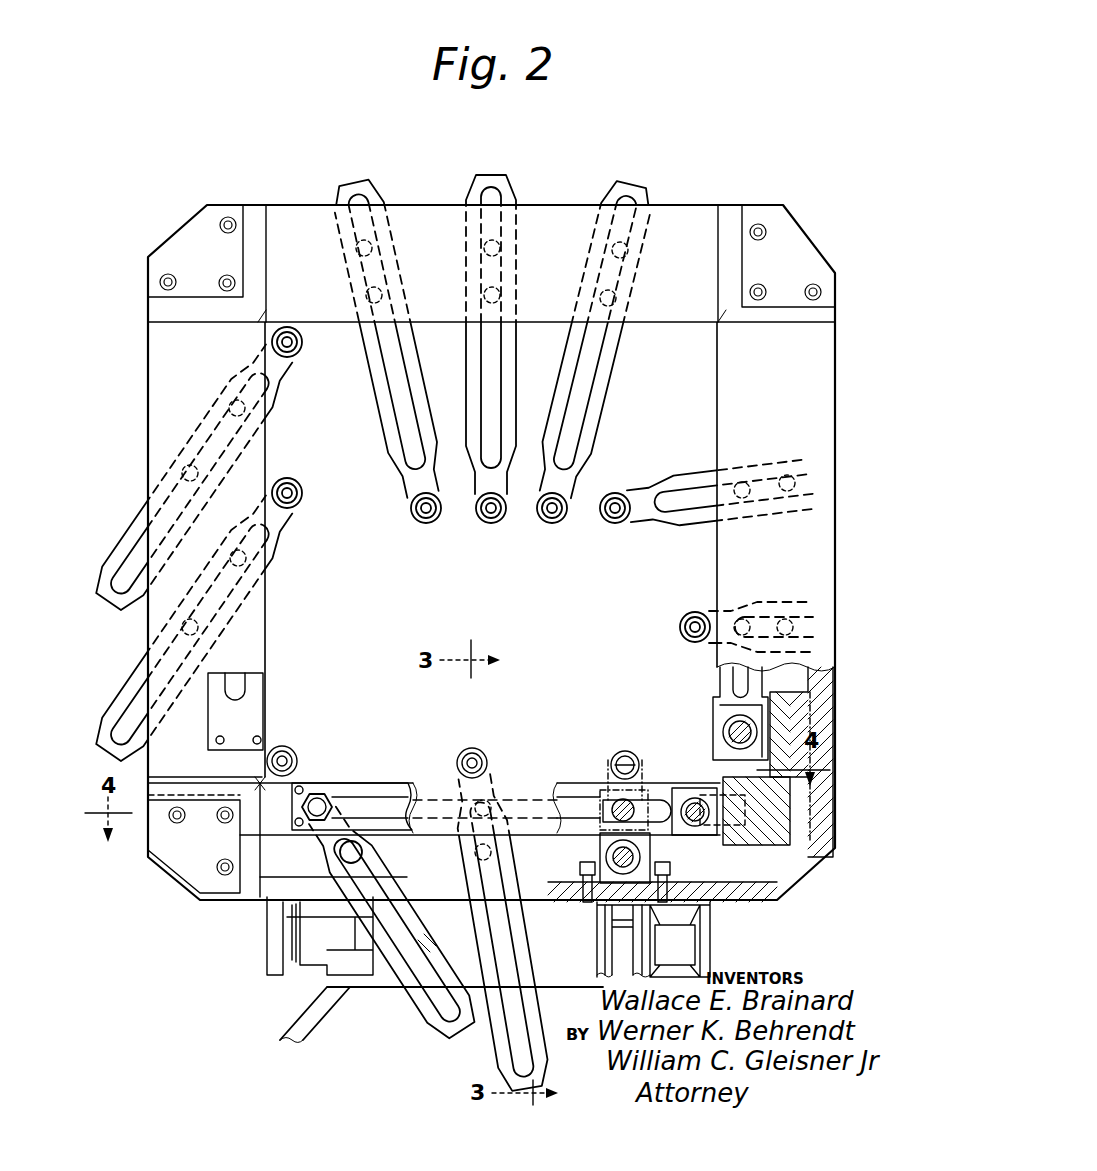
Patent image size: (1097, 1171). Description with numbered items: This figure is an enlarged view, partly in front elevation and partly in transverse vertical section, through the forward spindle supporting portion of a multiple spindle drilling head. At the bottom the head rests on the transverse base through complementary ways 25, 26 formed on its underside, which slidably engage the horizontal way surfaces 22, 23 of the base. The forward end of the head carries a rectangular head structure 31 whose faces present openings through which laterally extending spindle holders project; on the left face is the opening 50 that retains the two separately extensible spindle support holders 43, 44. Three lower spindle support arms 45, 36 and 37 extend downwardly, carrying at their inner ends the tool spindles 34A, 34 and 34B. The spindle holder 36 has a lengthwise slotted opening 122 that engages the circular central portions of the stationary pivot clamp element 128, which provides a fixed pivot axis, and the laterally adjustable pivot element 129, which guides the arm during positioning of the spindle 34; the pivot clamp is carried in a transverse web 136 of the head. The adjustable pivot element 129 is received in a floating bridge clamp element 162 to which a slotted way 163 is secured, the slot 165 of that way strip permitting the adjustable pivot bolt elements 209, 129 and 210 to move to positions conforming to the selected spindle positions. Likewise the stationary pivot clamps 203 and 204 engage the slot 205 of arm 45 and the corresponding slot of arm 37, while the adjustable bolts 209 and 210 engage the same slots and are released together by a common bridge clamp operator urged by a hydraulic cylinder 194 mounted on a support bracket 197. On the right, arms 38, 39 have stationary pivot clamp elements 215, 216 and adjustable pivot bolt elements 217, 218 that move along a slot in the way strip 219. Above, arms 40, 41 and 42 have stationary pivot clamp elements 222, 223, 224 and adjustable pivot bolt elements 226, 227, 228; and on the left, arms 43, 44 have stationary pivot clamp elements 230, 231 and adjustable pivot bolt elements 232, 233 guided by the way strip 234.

The way surface 22 is at (318, 940).
The way surface 23 is at (668, 946).
The way 25 is at (290, 930).
The way 26 is at (662, 932).
The rectangular head structure 31 is at (290, 215).
The tool spindle 34 is at (484, 738).
The tool spindle 34A is at (284, 745).
The tool spindle 34B is at (640, 722).
The spindle holder 36 is at (500, 826).
The spindle support arm 37 is at (640, 780).
The spindle support arm 38 is at (740, 618).
The spindle support arm 39 is at (688, 482).
The spindle holder 40 is at (628, 190).
The spindle holder 41 is at (496, 186).
The spindle holder 42 is at (357, 190).
The spindle support holder 43 is at (112, 548).
The spindle support holder 44 is at (130, 675).
The spindle support arm 45 is at (440, 1002).
The opening 50 is at (265, 612).
The slotted opening 122 is at (538, 1052).
The pivot clamp element 128 is at (475, 852).
The pivot element 129 is at (490, 800).
The transverse web 136 is at (566, 880).
The floating bridge clamp element 162 is at (270, 822).
The slotted way 163 is at (398, 792).
The slot 165 is at (360, 800).
The hydraulic cylinder 194 is at (688, 788).
The support bracket 197 is at (755, 780).
The stationary pivot clamp 203 is at (342, 854).
The stationary pivot clamp 204 is at (644, 858).
The slot 205 is at (470, 918).
The adjustable pivot bolt element 209 is at (320, 795).
The adjustable pivot bolt element 210 is at (620, 798).
The stationary pivot clamp element 215 is at (790, 618).
The stationary pivot clamp element 216 is at (790, 475).
The adjustable pivot bolt element 217 is at (750, 618).
The adjustable pivot bolt element 218 is at (744, 482).
The way strip 219 is at (720, 676).
The stationary pivot clamp element 222 is at (628, 250).
The stationary pivot clamp element 223 is at (500, 248).
The stationary pivot clamp element 224 is at (372, 248).
The adjustable pivot bolt element 226 is at (616, 298).
The adjustable pivot bolt element 227 is at (500, 295).
The adjustable pivot bolt element 228 is at (382, 295).
The stationary pivot clamp element 230 is at (182, 473).
The stationary pivot clamp element 231 is at (198, 630).
The adjustable pivot bolt element 232 is at (230, 410).
The adjustable pivot bolt element 233 is at (246, 558).
The way strip 234 is at (255, 700).